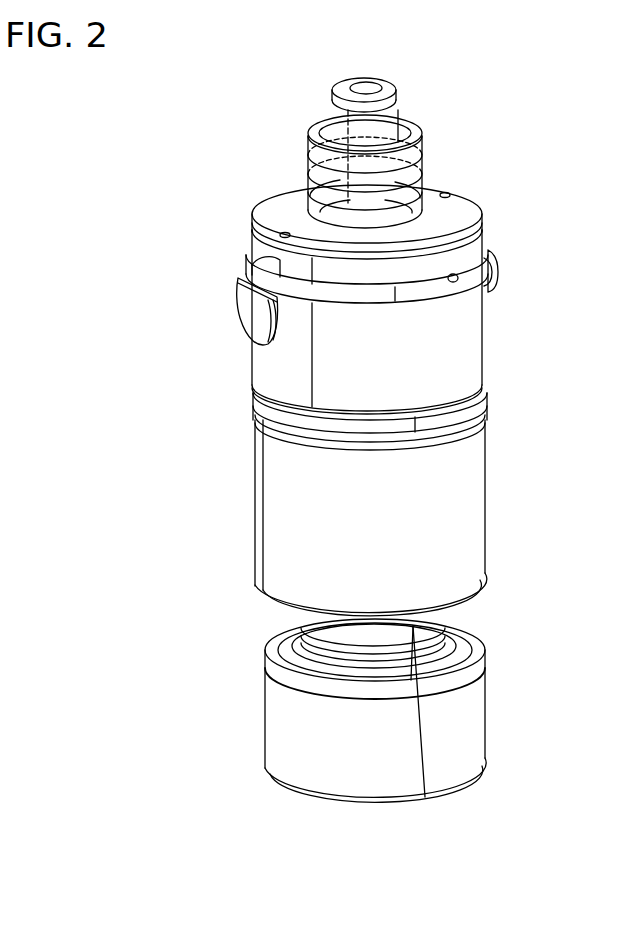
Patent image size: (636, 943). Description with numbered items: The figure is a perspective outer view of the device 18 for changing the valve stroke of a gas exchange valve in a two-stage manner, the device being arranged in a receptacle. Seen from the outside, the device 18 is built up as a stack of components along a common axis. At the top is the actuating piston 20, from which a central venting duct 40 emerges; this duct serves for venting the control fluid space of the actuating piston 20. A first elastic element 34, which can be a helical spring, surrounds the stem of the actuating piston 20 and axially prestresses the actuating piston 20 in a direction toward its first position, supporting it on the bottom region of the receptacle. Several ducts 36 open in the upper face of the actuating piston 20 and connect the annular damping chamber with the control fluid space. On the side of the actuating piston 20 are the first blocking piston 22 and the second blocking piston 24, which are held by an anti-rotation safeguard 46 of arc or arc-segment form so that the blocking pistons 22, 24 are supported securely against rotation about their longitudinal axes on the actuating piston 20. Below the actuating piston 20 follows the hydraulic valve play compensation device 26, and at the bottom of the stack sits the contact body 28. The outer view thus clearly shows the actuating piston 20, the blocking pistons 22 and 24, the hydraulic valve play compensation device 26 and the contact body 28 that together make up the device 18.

The device for changing a valve stroke 18 is at (240, 160).
The actuating piston 20 is at (398, 108).
The first blocking piston 22 is at (263, 314).
The second blocking piston 24 is at (498, 265).
The hydraulic valve play compensation device 26 is at (458, 520).
The contact body 28 is at (245, 683).
The first elastic element 34 is at (433, 174).
The ducts 36 is at (450, 195).
The central venting duct 40 is at (345, 88).
The anti-rotation safeguard 46 is at (247, 270).